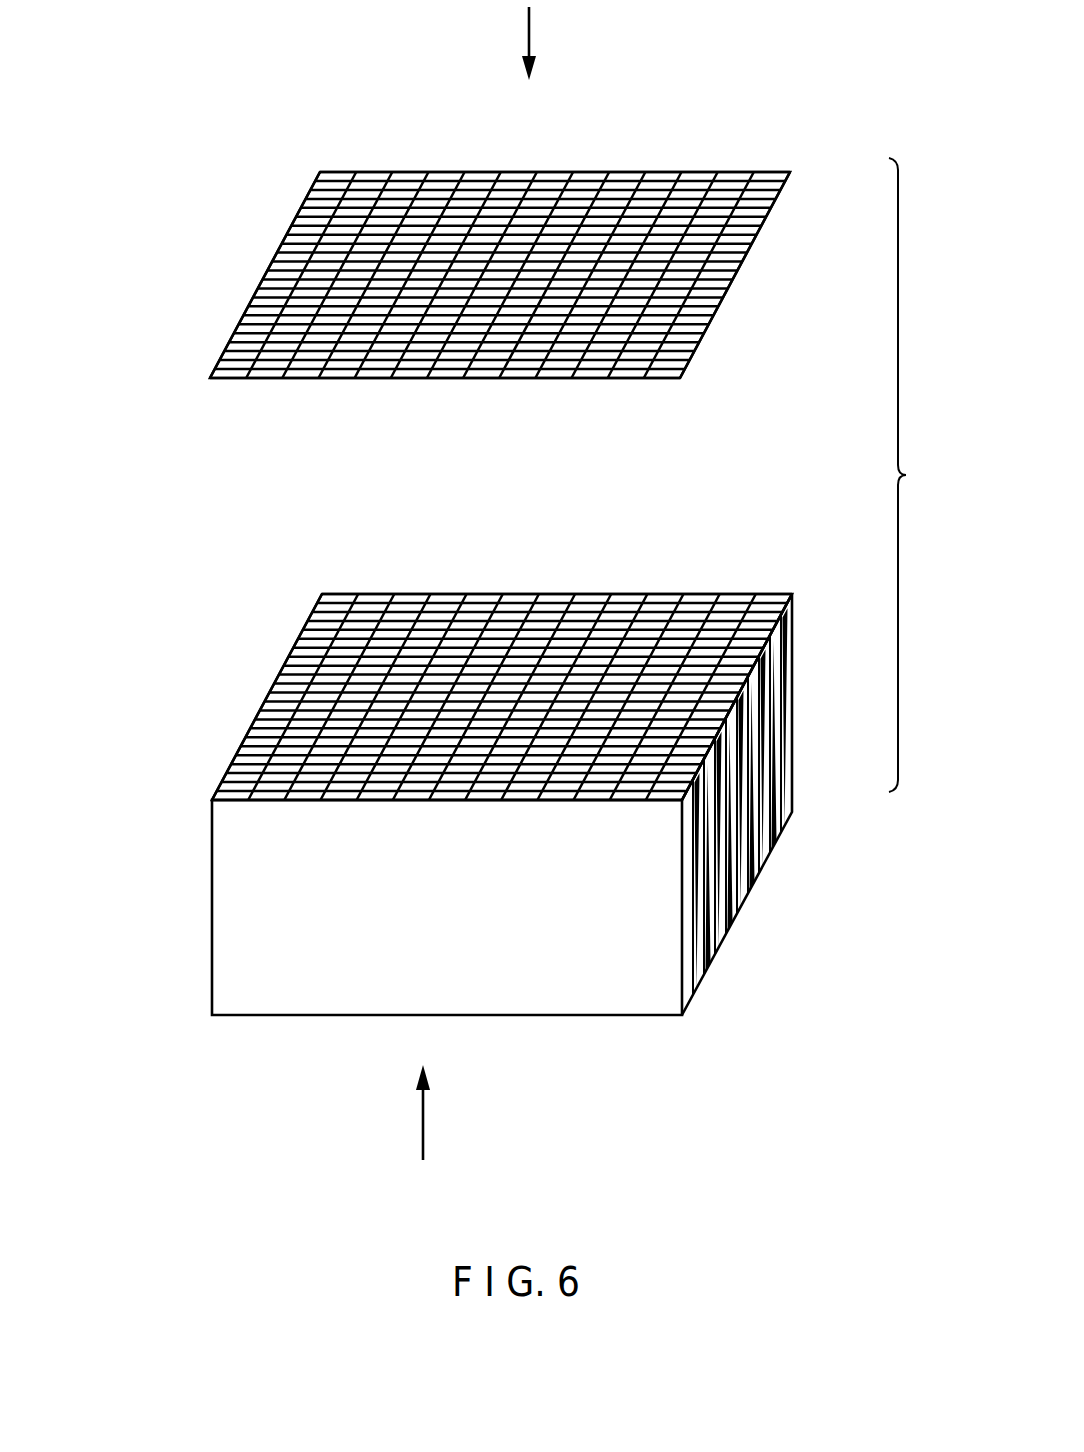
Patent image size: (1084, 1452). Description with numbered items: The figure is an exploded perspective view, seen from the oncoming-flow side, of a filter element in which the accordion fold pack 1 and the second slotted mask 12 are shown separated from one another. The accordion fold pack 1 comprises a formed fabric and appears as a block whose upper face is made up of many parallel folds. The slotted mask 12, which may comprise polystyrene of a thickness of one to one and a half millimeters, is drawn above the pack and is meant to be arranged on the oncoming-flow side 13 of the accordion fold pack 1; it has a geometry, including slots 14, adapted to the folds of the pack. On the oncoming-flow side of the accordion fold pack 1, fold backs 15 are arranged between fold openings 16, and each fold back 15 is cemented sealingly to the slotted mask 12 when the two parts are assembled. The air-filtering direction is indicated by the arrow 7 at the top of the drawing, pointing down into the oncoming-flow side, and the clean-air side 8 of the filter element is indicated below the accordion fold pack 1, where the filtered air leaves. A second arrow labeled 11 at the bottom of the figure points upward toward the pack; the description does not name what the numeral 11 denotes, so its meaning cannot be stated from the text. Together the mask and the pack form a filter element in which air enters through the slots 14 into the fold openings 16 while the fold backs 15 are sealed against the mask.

The accordion fold pack 1 is at (246, 910).
The air-filtering direction 7 is at (529, 32).
The clean-air side 8 is at (314, 1091).
The opposing direction arrow 11 is at (424, 1122).
The second slotted mask 12 is at (492, 275).
The oncoming-flow side 13 is at (454, 724).
The slots 14 is at (322, 210).
The fold backs 15 is at (330, 629).
The fold openings 16 is at (372, 615).